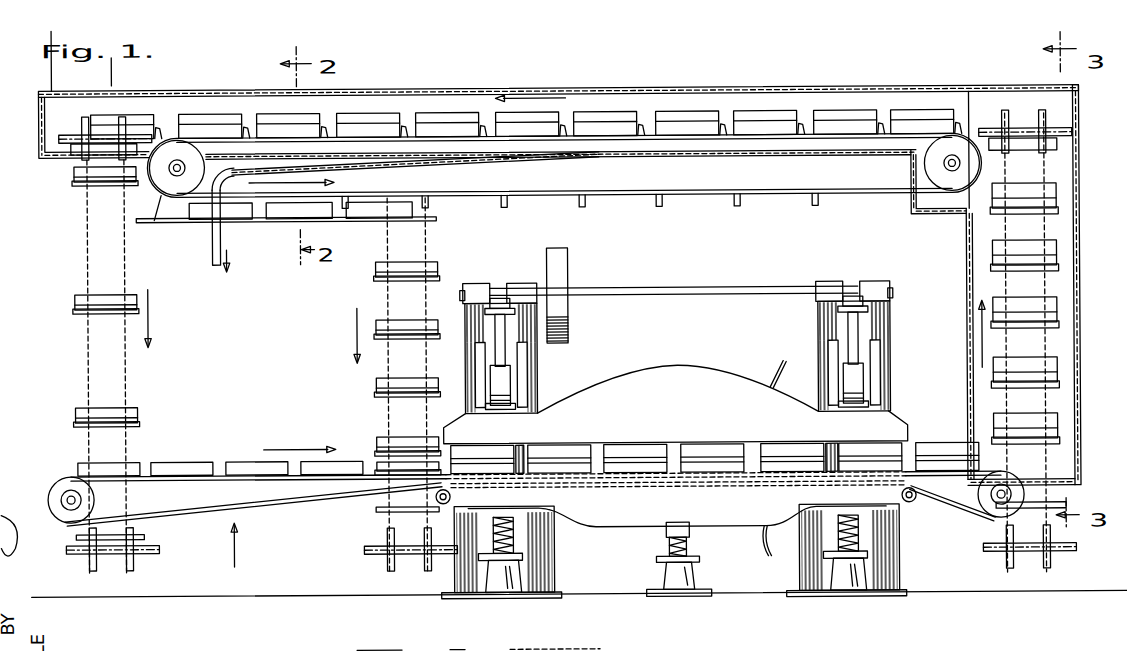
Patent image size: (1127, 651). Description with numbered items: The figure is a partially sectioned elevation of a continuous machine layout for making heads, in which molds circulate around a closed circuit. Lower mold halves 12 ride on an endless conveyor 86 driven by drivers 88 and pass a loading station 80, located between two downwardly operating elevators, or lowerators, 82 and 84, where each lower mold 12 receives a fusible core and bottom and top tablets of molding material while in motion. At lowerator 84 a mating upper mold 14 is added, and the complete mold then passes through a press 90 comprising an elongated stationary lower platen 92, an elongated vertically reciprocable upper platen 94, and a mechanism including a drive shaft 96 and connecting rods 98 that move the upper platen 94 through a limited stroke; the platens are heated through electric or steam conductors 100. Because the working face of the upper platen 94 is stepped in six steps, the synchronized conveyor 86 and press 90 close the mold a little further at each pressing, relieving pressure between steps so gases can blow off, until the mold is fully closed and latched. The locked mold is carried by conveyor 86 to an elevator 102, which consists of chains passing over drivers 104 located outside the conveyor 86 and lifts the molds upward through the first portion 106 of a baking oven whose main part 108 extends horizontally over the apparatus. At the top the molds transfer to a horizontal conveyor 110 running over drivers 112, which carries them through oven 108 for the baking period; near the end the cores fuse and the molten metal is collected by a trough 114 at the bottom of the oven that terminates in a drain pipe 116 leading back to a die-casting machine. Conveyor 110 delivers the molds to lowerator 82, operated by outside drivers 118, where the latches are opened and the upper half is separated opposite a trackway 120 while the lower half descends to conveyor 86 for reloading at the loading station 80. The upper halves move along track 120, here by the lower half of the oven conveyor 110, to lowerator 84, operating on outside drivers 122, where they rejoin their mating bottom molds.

The lower mold half 12 is at (73, 186).
The upper mold 14 is at (73, 167).
The loading station 80 is at (231, 554).
The lowerator 82 is at (112, 567).
The lowerator 84 is at (405, 572).
The endless conveyor 86 is at (323, 479).
The drivers 88 is at (60, 509).
The press 90 is at (675, 362).
The lower platen 92 is at (620, 520).
The upper platen 94 is at (628, 380).
The drive shaft 96 is at (620, 294).
The connecting rods 98 is at (500, 350).
The conductors 100 is at (772, 348).
The elevator 102 is at (1048, 473).
The drivers 104 is at (1042, 112).
The first portion of baking oven 106 is at (1077, 302).
The main part of baking oven 108 is at (698, 89).
The horizontal conveyor 110 is at (752, 139).
The drivers 112 is at (171, 181).
The trough 114 is at (388, 163).
The drain pipe 116 is at (222, 245).
The drivers 118 is at (85, 114).
The trackway 120 is at (196, 221).
The drivers 122 is at (385, 564).